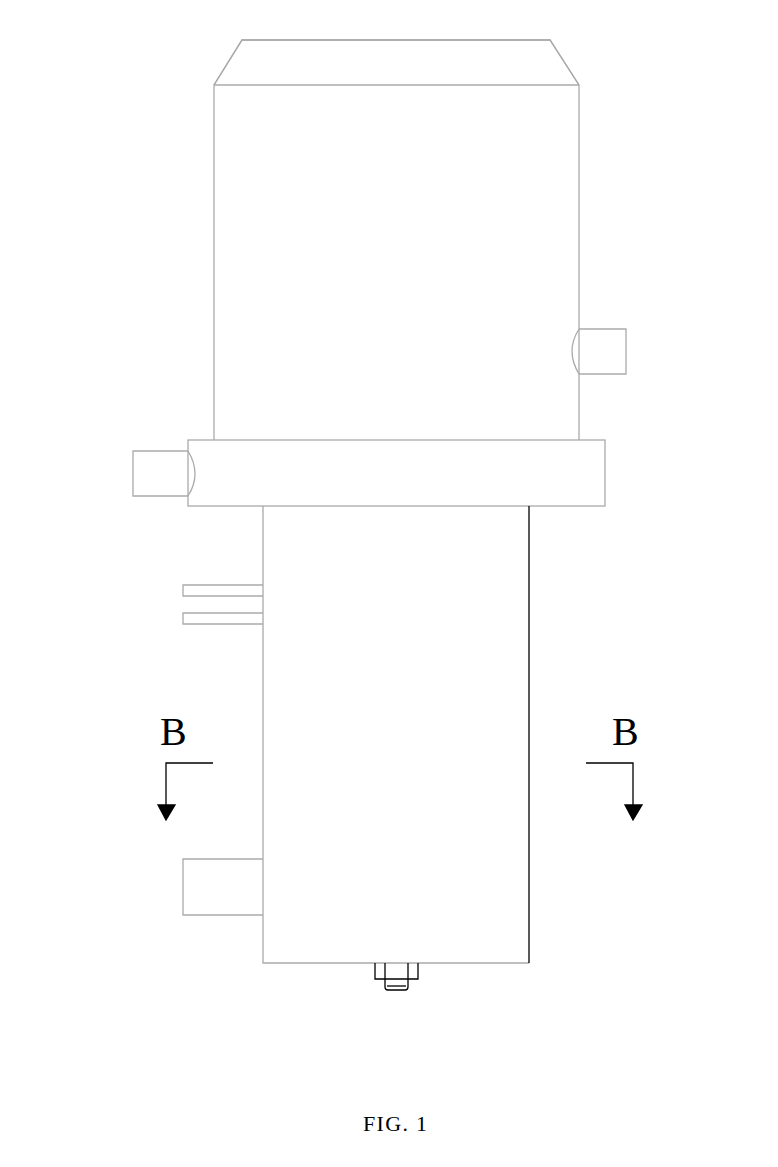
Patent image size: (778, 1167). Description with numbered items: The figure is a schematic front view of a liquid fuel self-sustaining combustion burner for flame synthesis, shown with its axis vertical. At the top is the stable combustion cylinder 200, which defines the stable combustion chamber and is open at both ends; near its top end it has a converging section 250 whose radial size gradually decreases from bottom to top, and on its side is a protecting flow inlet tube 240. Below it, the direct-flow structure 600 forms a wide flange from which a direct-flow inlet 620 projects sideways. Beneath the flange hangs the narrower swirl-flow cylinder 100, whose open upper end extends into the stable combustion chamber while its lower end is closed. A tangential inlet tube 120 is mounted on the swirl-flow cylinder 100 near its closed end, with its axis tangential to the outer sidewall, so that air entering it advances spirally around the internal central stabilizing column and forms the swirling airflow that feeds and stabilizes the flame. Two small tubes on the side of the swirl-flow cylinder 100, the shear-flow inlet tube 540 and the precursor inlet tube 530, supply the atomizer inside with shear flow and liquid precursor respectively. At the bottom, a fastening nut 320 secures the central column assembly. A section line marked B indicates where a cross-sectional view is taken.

The swirl-flow cylinder 100 is at (530, 595).
The tangential inlet tube 120 is at (206, 885).
The stable combustion cylinder 200 is at (579, 207).
The protecting flow inlet tube 240 is at (605, 350).
The converging section 250 is at (566, 60).
The fastening nut 320 is at (413, 970).
The precursor inlet tube 530 is at (197, 619).
The shear-flow inlet tube 540 is at (183, 590).
The direct-flow structure 600 is at (578, 472).
The direct-flow inlet 620 is at (133, 474).